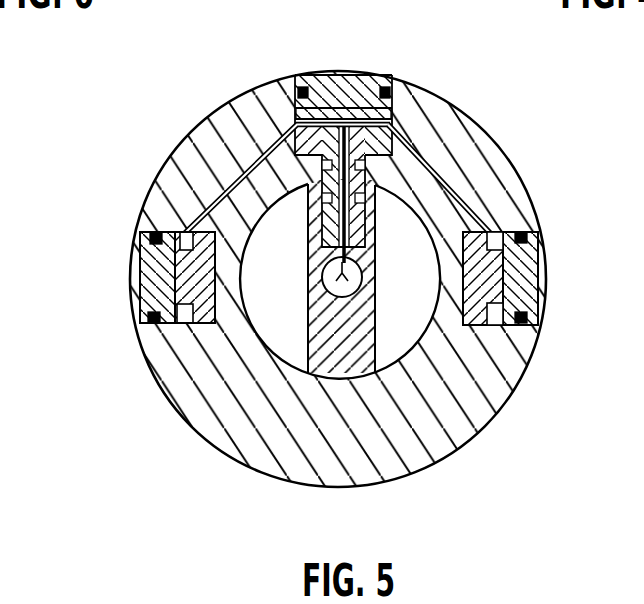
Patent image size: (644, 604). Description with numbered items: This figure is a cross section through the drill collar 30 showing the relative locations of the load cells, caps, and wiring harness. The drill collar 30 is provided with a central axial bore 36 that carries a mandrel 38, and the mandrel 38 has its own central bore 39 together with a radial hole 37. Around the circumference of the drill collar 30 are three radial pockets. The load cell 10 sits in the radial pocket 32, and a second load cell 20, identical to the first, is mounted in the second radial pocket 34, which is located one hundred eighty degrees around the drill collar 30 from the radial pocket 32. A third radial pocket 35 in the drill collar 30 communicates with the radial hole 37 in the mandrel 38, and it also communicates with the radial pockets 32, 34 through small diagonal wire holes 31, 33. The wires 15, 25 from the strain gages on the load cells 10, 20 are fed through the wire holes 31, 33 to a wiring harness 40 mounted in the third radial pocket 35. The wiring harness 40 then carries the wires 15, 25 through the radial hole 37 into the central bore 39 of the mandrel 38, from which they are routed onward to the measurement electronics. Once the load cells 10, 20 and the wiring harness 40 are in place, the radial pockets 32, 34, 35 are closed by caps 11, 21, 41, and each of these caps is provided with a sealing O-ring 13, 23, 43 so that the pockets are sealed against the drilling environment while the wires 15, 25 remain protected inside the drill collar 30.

The load cell 10 is at (483, 278).
The cap 11 is at (522, 256).
The sealing O-ring 13 is at (537, 233).
The wires 15 is at (418, 135).
The second load cell 20 is at (200, 325).
The cap 21 is at (150, 270).
The sealing O-ring 23 is at (156, 232).
The wires 25 is at (270, 150).
The drill collar 30 is at (493, 443).
The diagonal wire hole 31 is at (453, 178).
The radial pocket 32 is at (513, 328).
The diagonal wire hole 33 is at (230, 176).
The second radial pocket 34 is at (148, 330).
The third radial pocket 35 is at (407, 113).
The central axial bore 36 is at (470, 208).
The radial hole 37 is at (363, 248).
The mandrel 38 is at (376, 303).
The central bore 39 is at (353, 272).
The wiring harness 40 is at (323, 140).
The cap 41 is at (362, 100).
The sealing O-ring 43 is at (385, 96).